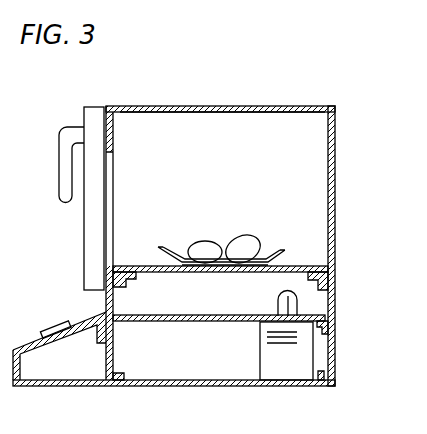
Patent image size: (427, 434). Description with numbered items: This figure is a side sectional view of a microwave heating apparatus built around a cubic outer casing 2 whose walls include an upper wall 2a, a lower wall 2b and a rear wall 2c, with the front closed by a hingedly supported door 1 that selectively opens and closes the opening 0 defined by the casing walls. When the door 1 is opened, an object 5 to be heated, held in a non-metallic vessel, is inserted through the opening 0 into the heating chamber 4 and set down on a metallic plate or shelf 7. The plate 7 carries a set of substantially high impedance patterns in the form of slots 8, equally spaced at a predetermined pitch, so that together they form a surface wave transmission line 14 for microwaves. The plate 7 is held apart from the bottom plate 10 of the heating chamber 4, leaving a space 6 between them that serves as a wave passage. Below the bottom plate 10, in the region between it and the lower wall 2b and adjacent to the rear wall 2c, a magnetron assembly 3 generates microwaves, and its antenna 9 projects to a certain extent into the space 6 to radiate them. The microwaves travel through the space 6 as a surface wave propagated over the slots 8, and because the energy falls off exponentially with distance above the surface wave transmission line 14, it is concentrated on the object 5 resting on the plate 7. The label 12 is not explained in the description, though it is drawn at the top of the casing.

The opening 0 is at (113, 198).
The door 1 is at (92, 203).
The outer casing 2 is at (71, 389).
The upper wall 2a is at (270, 106).
The lower wall 2b is at (294, 387).
The rear wall 2c is at (336, 200).
The magnetron assembly 3 is at (281, 362).
The heating chamber 4 is at (219, 172).
The object to be heated 5 is at (207, 247).
The space 6 is at (219, 306).
The metallic plate 7 is at (196, 270).
The slots 8 is at (146, 266).
The antenna 9 is at (282, 301).
The bottom plate 10 is at (158, 322).
The top wall lining 12 is at (193, 106).
The surface wave transmission line 14 is at (295, 265).